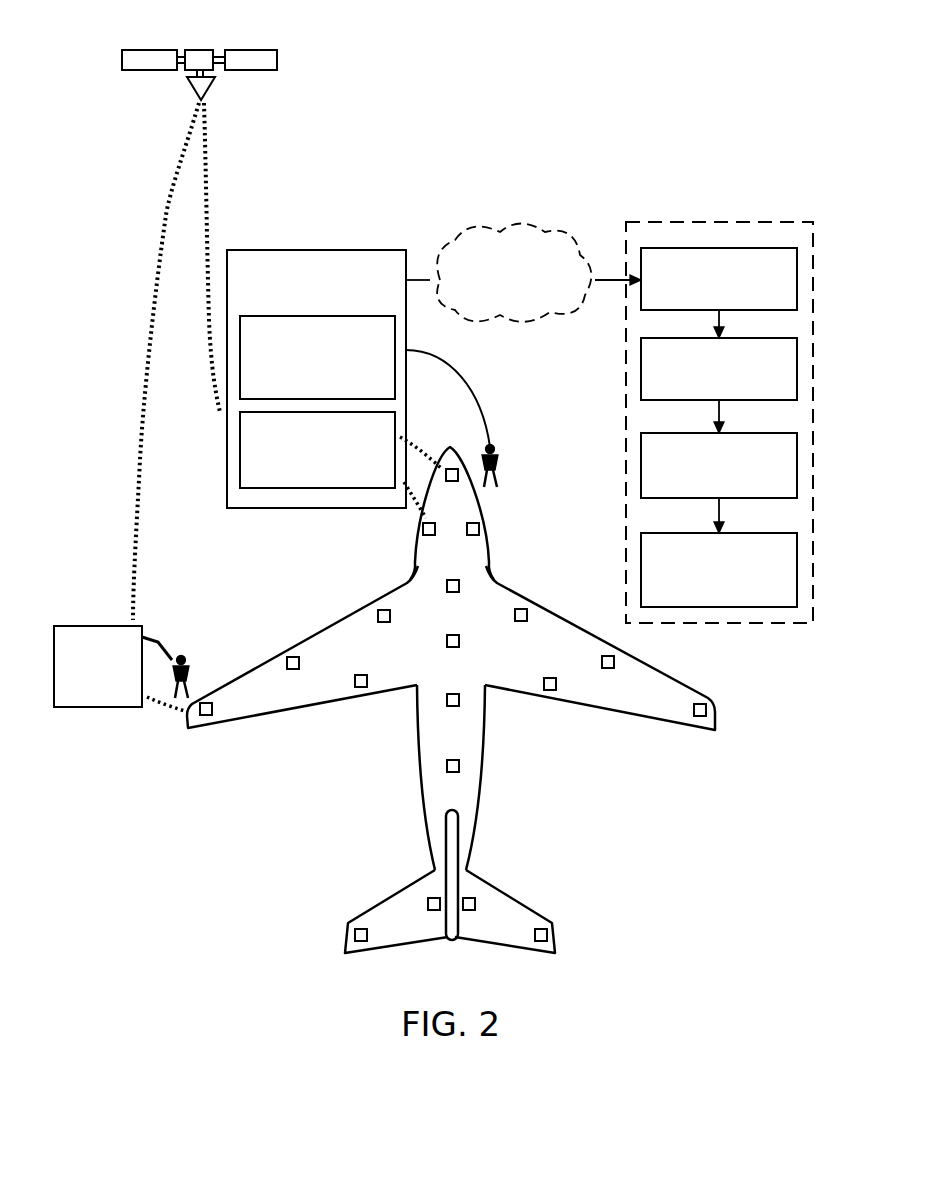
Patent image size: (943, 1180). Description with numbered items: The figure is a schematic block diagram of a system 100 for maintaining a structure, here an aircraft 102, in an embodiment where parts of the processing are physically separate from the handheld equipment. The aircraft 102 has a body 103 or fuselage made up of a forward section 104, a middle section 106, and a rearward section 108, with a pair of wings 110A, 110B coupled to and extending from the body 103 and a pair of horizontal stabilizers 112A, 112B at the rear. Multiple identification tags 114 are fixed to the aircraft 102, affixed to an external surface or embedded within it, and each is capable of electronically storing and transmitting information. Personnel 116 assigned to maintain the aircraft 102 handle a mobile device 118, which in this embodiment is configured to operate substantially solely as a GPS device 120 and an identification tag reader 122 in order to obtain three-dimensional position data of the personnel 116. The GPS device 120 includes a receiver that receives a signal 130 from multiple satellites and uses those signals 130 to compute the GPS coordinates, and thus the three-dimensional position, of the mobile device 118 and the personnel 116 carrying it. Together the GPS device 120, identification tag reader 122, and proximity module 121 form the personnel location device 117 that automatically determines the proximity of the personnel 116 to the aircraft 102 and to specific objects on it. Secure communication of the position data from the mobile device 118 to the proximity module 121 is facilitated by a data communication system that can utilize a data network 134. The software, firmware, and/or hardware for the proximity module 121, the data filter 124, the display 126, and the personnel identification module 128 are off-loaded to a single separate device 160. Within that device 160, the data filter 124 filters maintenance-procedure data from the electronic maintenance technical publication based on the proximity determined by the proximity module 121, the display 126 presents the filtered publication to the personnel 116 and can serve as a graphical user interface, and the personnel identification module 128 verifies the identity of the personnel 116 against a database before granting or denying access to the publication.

The system 100 is at (563, 50).
The personnel location device 117 is at (556, 108).
The GPS device 120 is at (200, 50).
The signal 130 is at (182, 180).
The mobile device 118 is at (498, 449).
The personnel 116 is at (499, 463).
The data network 134 is at (539, 273).
The separate device 160 is at (690, 222).
The proximity module 121 is at (719, 293).
The data filter 124 is at (719, 385).
The display 126 is at (719, 483).
The personnel identification module 128 is at (719, 570).
The identification tag reader 122 is at (317, 450).
The aircraft 102 is at (468, 730).
The forward section 104 is at (457, 482).
The identification tags 114 is at (430, 530).
The middle section 106 is at (450, 670).
The body 103 is at (468, 740).
The rearward section 108 is at (465, 825).
The wing 110A is at (253, 700).
The wing 110B is at (651, 688).
The horizontal stabilizer 112A is at (382, 935).
The horizontal stabilizer 112B is at (510, 935).